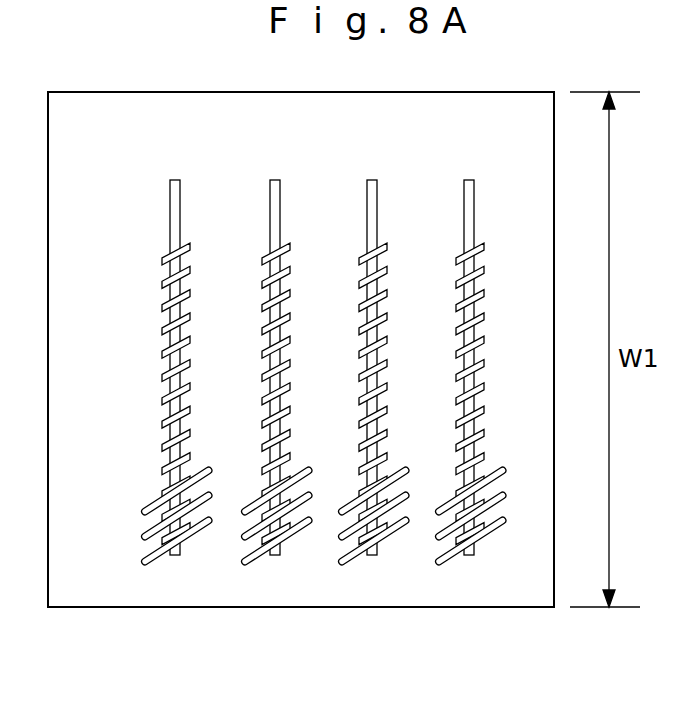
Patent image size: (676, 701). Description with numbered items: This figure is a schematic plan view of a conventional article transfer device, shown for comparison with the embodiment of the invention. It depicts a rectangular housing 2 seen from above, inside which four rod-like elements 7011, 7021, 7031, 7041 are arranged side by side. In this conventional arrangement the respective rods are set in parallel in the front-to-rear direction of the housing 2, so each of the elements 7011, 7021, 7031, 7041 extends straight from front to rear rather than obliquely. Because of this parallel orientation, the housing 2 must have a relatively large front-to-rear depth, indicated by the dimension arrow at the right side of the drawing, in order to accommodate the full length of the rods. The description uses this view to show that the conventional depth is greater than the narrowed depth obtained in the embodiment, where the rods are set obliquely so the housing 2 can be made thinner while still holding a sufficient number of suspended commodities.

The housing 2 is at (453, 608).
The electrode 70_11 7011 is at (177, 337).
The electrode 70_21 7021 is at (277, 337).
The electrode 70_31 7031 is at (374, 337).
The electrode 70_41 7041 is at (471, 337).